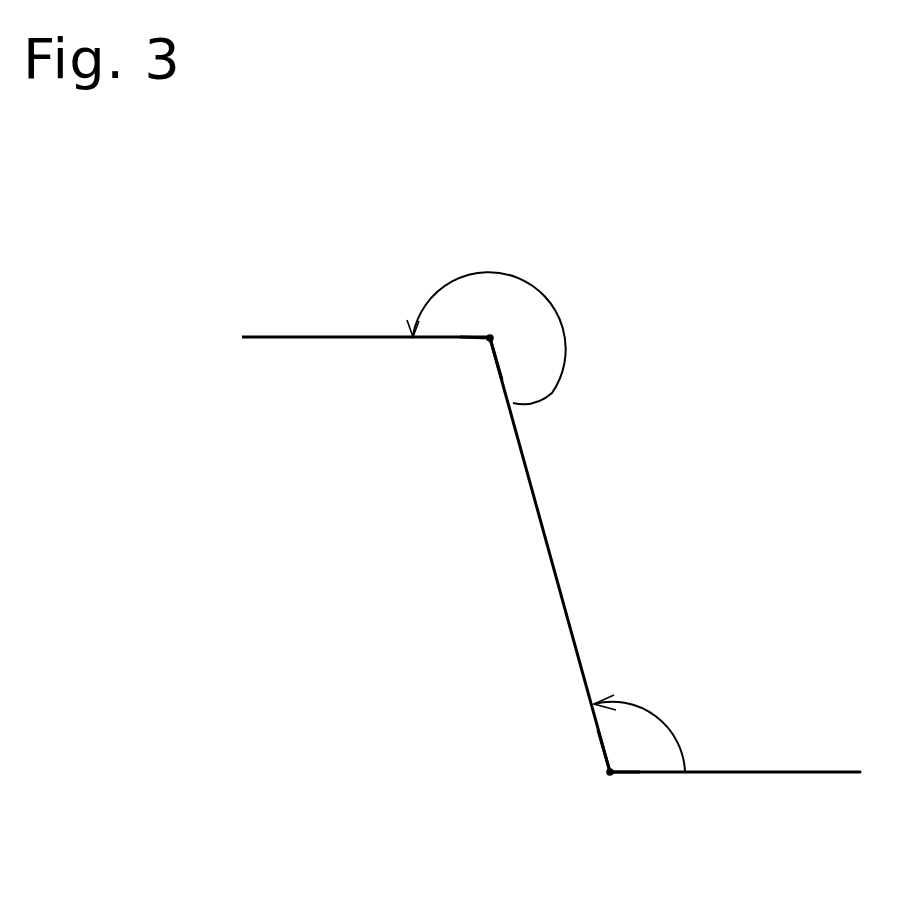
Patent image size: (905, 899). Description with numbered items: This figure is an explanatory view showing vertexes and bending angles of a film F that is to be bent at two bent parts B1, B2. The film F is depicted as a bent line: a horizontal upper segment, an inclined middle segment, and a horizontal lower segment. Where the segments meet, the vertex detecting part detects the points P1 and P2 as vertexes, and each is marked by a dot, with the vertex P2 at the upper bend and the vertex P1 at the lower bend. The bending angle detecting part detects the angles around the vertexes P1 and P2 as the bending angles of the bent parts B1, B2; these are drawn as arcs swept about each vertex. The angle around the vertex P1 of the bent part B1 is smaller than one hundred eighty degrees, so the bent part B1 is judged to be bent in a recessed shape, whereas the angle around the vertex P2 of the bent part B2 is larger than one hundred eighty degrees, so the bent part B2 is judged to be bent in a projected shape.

The film F is at (313, 338).
The vertex P1 is at (603, 778).
The vertex P2 is at (486, 343).
The bent part B1 is at (655, 697).
The bent part B2 is at (530, 257).